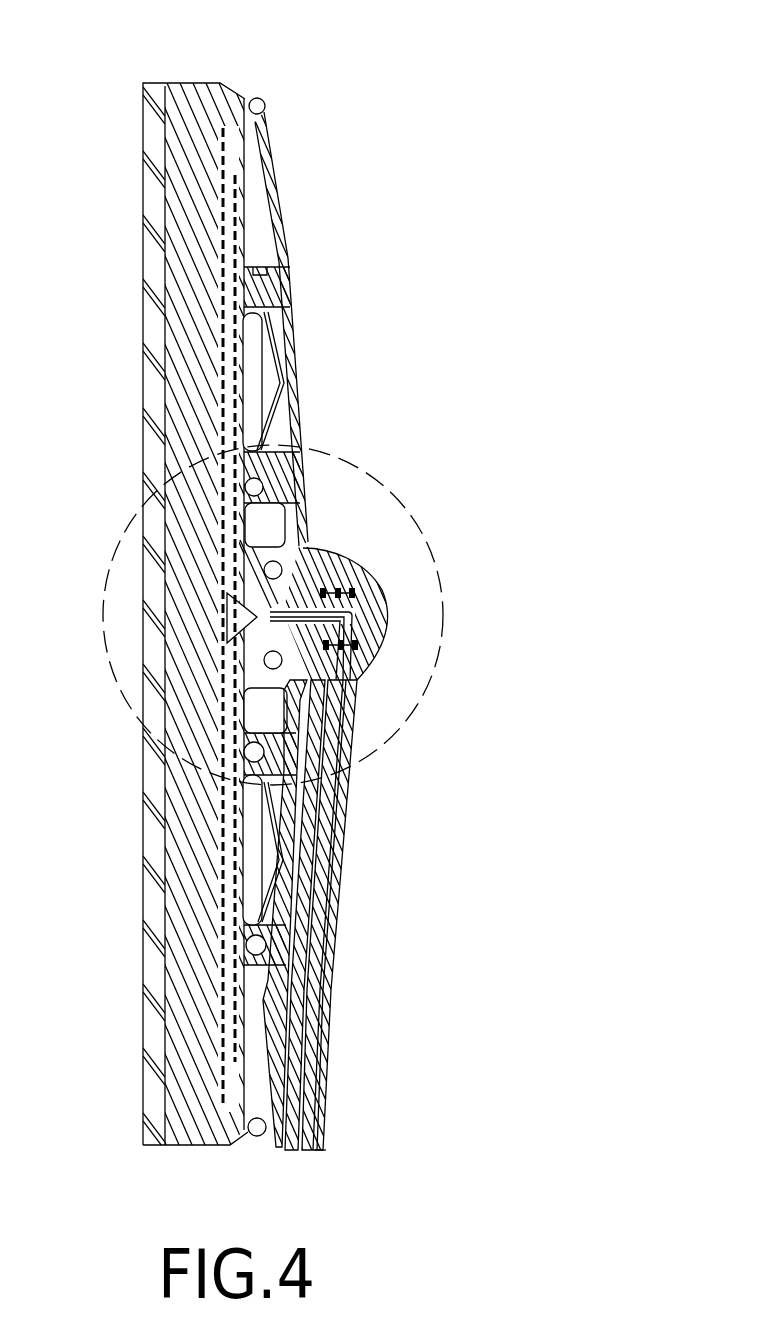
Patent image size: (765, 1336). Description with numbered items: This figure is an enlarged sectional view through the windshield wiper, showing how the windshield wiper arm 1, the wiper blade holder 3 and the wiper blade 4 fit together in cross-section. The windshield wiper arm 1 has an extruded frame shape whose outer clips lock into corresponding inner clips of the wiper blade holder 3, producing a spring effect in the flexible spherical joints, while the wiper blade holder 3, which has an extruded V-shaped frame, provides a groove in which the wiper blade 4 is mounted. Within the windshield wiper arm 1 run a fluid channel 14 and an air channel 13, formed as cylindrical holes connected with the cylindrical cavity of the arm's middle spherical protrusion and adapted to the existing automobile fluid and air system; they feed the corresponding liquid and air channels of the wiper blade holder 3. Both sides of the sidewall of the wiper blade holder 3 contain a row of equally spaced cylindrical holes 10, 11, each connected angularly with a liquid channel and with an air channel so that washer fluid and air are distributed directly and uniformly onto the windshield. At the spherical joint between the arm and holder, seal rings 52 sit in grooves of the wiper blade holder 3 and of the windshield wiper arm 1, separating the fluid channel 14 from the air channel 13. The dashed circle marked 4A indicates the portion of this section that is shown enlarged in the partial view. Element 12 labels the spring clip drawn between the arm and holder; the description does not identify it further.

The windshield wiper arm 1 is at (335, 932).
The wiper blade holder 3 is at (193, 83).
The wiper blade 4 is at (143, 150).
The enlarged partial view 4A is at (422, 533).
The cylindrical holes 10 is at (223, 160).
The cylindrical holes 11 is at (235, 212).
The spring clip 12 is at (283, 387).
The air channel 13 is at (315, 1040).
The fluid channel 14 is at (313, 1122).
The seal rings 52 is at (355, 645).